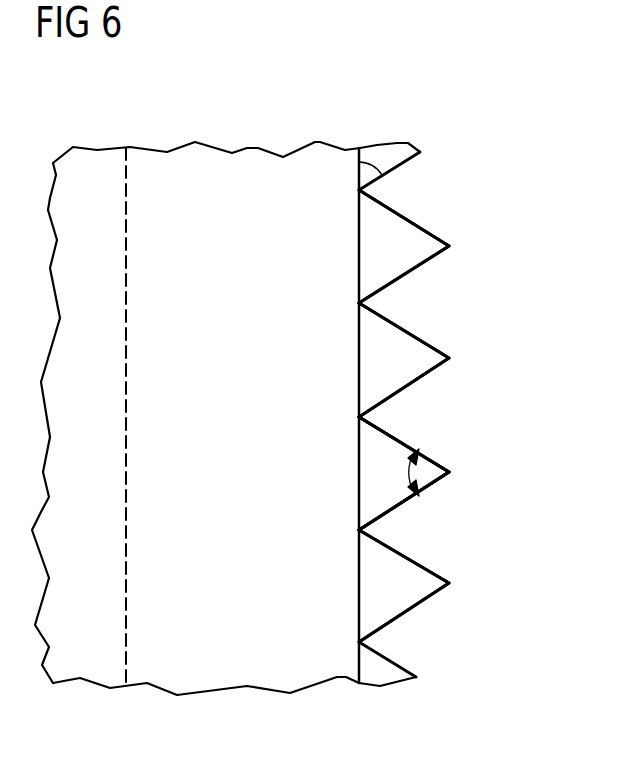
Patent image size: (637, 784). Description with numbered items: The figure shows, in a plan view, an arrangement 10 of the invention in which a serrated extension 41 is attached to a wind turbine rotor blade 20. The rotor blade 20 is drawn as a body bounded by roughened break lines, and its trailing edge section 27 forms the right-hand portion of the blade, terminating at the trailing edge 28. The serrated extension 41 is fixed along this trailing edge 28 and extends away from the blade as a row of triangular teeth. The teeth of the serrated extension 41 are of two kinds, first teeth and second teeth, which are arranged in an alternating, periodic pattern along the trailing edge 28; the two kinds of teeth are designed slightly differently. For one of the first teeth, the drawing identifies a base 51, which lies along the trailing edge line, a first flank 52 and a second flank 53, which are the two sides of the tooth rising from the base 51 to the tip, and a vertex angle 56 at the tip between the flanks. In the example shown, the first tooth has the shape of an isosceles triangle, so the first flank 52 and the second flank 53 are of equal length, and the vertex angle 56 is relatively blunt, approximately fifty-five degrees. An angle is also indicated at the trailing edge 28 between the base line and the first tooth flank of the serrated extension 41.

The arrangement 10 is at (358, 705).
The wind turbine rotor blade 20 is at (154, 121).
The trailing edge section 27 is at (246, 167).
The trailing edge 28 is at (382, 175).
The serrated extension 41 is at (500, 317).
The base 51 is at (358, 461).
The first flank 52 is at (392, 432).
The second flank 53 is at (383, 517).
The vertex angle 56 is at (407, 472).